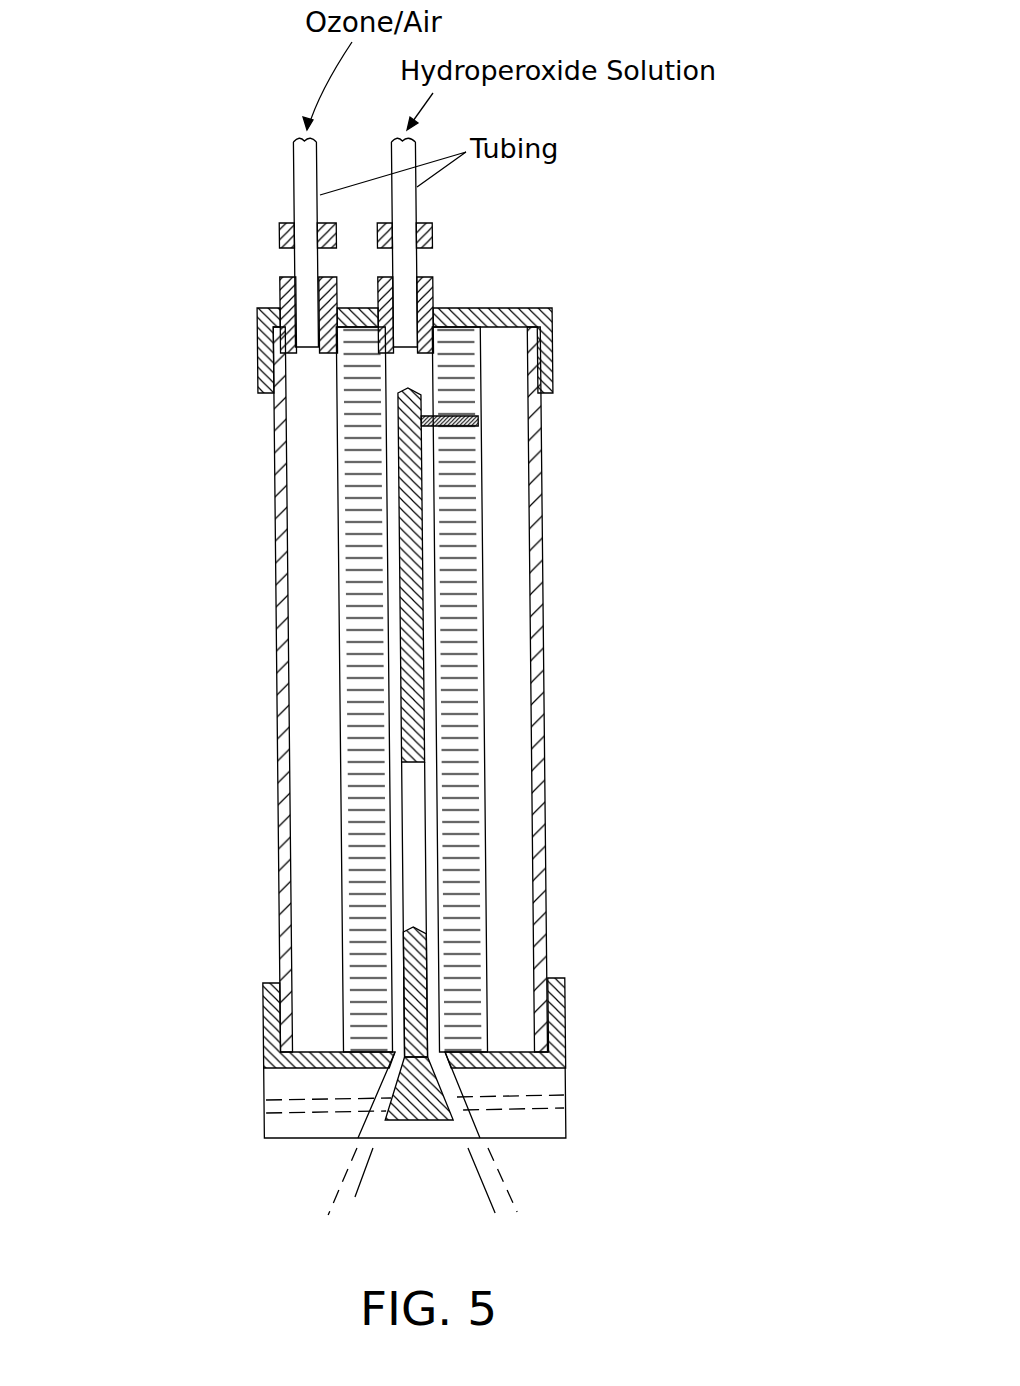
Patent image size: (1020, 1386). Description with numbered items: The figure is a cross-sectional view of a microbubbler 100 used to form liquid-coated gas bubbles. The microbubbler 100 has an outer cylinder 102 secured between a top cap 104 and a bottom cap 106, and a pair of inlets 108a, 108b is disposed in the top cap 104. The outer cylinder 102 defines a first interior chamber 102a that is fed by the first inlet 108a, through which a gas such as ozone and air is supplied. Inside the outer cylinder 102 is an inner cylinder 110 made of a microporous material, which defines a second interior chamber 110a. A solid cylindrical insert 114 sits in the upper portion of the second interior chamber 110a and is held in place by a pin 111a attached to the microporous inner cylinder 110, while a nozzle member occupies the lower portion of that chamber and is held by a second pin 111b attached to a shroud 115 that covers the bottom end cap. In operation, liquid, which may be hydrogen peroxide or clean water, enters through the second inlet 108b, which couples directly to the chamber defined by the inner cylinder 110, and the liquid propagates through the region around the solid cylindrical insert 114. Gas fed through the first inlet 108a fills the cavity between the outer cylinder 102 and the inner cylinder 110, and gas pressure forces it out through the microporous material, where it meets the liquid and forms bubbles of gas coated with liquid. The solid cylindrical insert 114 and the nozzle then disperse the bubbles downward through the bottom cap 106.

The microbubbler 100 is at (212, 230).
The outer cylinder 102 is at (548, 880).
The first interior chamber 102a is at (308, 440).
The top cap 104 is at (566, 336).
The bottom cap 106 is at (563, 1022).
The first inlet 108a is at (277, 280).
The second inlet 108b is at (442, 268).
The inner cylinder 110 is at (455, 593).
The second interior chamber 110a is at (432, 740).
The pin 111a is at (453, 427).
The second pin 111b is at (307, 1113).
The solid cylindrical insert 114 is at (417, 820).
The shroud 115 is at (565, 1080).